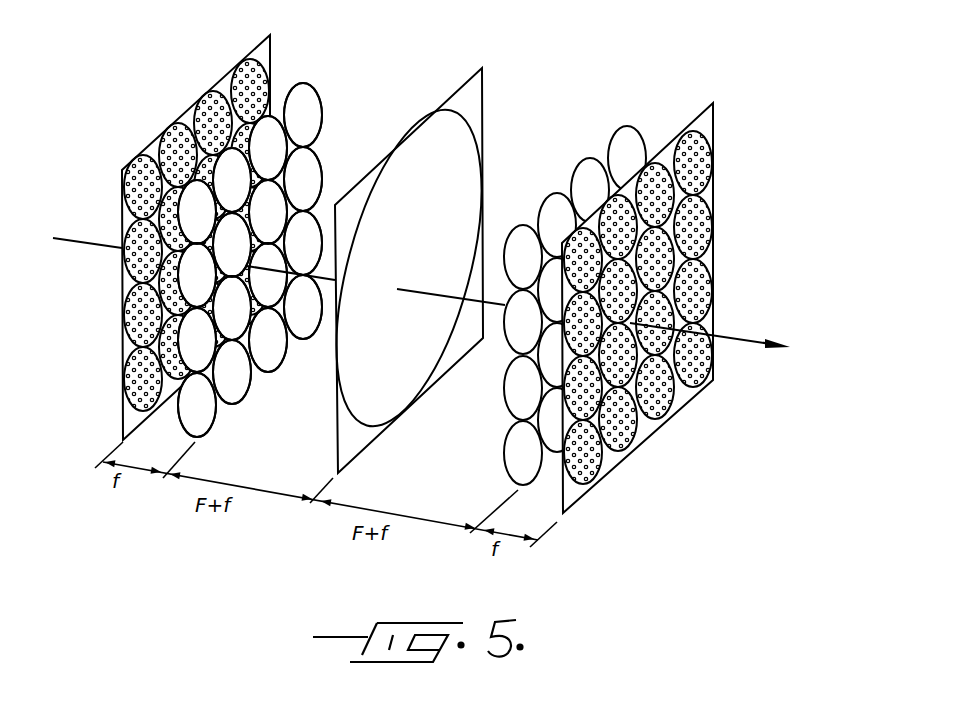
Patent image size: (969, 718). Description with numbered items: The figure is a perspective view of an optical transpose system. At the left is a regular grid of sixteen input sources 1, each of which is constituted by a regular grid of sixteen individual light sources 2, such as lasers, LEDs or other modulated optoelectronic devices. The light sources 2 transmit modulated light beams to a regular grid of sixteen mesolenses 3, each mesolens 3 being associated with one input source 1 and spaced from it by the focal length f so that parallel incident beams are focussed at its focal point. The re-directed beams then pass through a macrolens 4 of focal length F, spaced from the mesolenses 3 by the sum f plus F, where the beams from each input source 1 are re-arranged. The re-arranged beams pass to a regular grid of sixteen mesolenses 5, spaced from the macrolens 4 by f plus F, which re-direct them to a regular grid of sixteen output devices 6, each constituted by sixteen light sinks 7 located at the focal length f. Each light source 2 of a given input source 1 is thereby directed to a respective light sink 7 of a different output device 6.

The input source 1 is at (215, 61).
The light source 2 is at (172, 138).
The mesolens 3 is at (313, 103).
The macrolens 4 is at (458, 162).
The mesolens 5 is at (628, 132).
The output device 6 is at (730, 126).
The light sink 7 is at (697, 162).